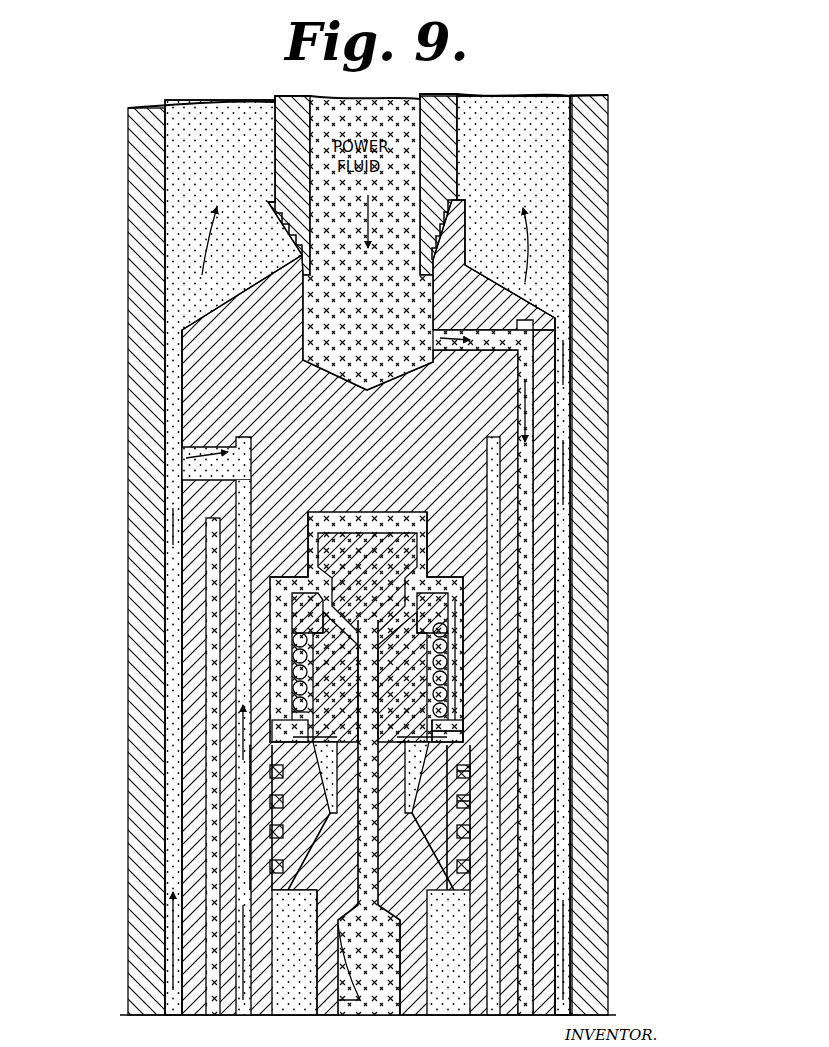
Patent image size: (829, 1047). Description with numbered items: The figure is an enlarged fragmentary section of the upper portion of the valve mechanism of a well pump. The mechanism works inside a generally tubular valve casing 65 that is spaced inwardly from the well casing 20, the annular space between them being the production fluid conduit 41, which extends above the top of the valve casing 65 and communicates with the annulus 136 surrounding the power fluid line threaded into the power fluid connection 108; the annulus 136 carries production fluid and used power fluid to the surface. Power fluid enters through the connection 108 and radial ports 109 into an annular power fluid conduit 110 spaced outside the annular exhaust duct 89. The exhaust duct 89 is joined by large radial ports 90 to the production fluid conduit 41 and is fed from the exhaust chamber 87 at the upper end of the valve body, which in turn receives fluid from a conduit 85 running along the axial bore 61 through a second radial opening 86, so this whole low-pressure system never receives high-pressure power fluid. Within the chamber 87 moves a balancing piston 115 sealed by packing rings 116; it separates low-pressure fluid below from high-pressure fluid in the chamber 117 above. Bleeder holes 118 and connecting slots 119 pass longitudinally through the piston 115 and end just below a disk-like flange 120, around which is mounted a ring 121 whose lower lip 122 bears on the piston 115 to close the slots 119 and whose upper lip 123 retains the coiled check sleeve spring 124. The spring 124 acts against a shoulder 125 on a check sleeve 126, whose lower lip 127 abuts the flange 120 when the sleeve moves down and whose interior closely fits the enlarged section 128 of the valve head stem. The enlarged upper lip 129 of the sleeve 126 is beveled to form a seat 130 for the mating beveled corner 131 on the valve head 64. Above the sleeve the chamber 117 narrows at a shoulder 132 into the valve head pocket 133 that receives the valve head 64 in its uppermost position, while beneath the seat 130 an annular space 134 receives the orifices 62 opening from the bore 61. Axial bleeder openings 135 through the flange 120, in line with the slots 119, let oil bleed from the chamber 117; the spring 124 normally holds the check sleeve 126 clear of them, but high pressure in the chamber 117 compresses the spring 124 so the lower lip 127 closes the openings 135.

The well casing 20 is at (162, 830).
The production fluid conduit 41 is at (172, 380).
The axial bore 61 is at (386, 1010).
The orifices 62 is at (350, 636).
The valve head 64 is at (318, 550).
The valve casing 65 is at (262, 762).
The conduit 85 is at (358, 1010).
The second radial opening 86 is at (300, 1000).
The exhaust chamber 87 is at (296, 936).
The annular exhaust duct 89 is at (249, 1010).
The radial ports 90 is at (196, 463).
The power fluid connection 108 is at (440, 300).
The radial ports 109 is at (532, 335).
The annular power fluid conduit 110 is at (560, 470).
The balancing piston 115 is at (432, 752).
The packing rings 116 is at (466, 771).
The chamber 117 is at (286, 692).
The bleeder holes 118 is at (276, 832).
The connecting slots 119 is at (452, 802).
The disk-like flange 120 is at (316, 748).
The ring 121 is at (452, 702).
The lower lip 122 is at (442, 724).
The upper lip 123 is at (442, 682).
The check sleeve spring 124 is at (460, 636).
The shoulder 125 is at (432, 602).
The check sleeve 126 is at (497, 592).
The lower lip 127 is at (296, 702).
The enlarged section 128 is at (300, 672).
The lip 129 is at (452, 588).
The seat 130 is at (456, 576).
The beveled corner 131 is at (300, 598).
The shoulder 132 is at (286, 602).
The valve head pocket 133 is at (422, 520).
The annular space 134 is at (420, 556).
The axial bleeder openings 135 is at (288, 736).
The annulus 136 is at (215, 180).